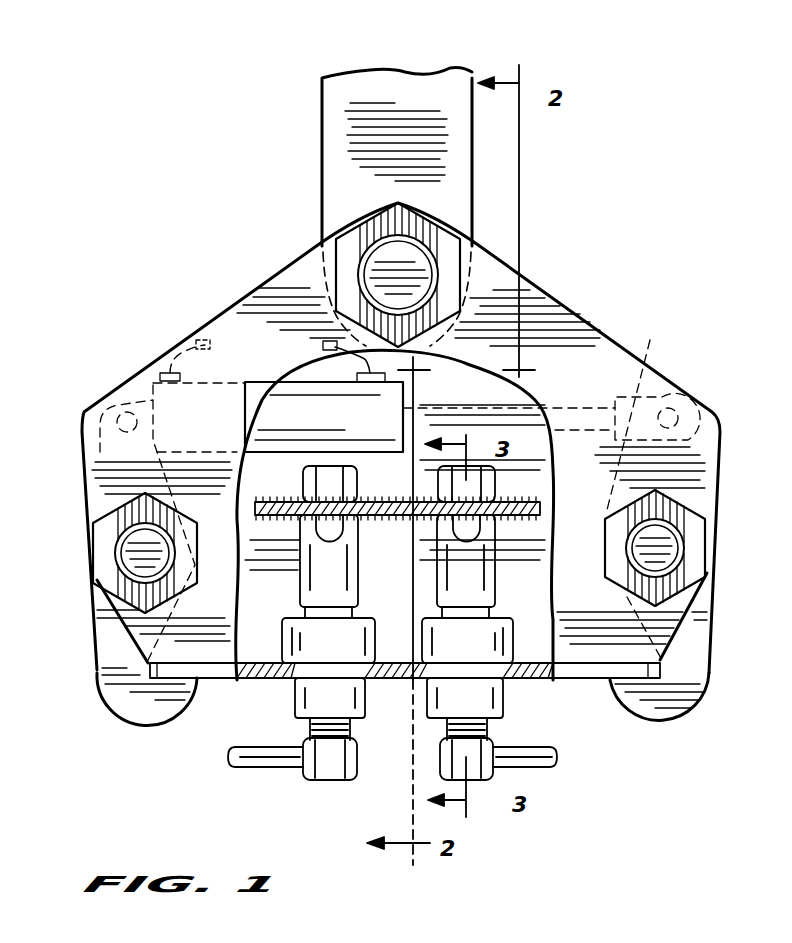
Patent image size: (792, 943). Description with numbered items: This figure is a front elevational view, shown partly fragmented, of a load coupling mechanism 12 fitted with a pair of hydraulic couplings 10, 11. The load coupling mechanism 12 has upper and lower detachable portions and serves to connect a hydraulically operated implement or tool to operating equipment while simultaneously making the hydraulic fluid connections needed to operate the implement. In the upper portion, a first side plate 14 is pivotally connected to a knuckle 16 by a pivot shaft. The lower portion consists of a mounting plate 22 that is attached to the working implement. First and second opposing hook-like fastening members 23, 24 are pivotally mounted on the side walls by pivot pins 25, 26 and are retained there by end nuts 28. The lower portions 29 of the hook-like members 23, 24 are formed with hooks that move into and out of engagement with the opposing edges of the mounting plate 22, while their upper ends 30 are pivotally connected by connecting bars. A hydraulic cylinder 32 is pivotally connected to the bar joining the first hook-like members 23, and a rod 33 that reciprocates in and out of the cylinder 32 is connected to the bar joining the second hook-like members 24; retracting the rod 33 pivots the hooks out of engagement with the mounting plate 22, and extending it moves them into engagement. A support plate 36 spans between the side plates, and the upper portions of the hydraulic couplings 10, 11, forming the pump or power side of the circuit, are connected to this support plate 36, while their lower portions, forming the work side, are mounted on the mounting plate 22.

The hydraulic coupling 10 is at (520, 610).
The hydraulic coupling 11 is at (298, 583).
The load coupling mechanism 12 is at (553, 282).
The first side plate 14 is at (298, 283).
The knuckle 16 is at (348, 138).
The mounting plate 22 is at (580, 678).
The first hook-like fastening member 23 is at (90, 660).
The second hook-like fastening member 24 is at (702, 642).
The pivot pin 25 is at (145, 553).
The pivot pin 26 is at (660, 550).
The end nut 28 is at (110, 527).
The lower portion of hook-like member 29 is at (143, 713).
The upper end of hook-like member 30 is at (78, 453).
The hydraulic cylinder 32 is at (280, 412).
The rod 33 is at (585, 405).
The support plate 36 is at (300, 518).